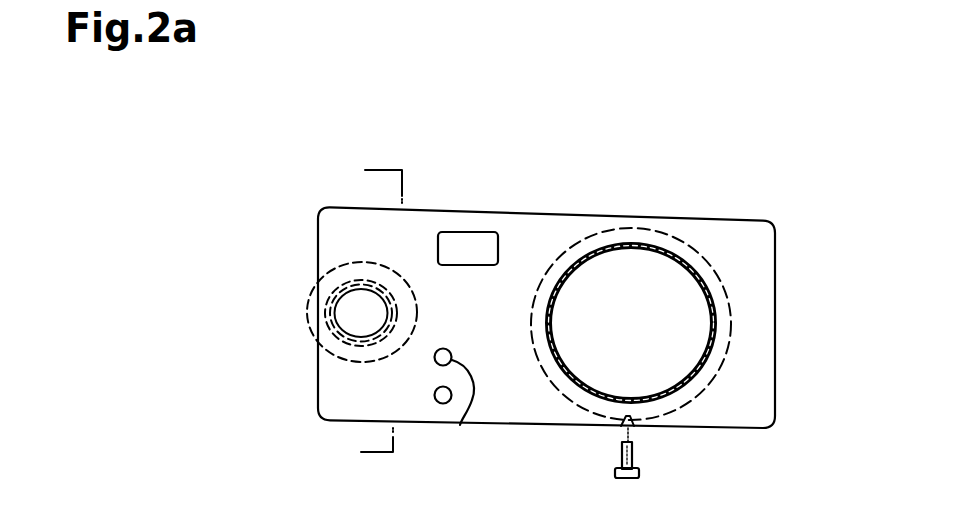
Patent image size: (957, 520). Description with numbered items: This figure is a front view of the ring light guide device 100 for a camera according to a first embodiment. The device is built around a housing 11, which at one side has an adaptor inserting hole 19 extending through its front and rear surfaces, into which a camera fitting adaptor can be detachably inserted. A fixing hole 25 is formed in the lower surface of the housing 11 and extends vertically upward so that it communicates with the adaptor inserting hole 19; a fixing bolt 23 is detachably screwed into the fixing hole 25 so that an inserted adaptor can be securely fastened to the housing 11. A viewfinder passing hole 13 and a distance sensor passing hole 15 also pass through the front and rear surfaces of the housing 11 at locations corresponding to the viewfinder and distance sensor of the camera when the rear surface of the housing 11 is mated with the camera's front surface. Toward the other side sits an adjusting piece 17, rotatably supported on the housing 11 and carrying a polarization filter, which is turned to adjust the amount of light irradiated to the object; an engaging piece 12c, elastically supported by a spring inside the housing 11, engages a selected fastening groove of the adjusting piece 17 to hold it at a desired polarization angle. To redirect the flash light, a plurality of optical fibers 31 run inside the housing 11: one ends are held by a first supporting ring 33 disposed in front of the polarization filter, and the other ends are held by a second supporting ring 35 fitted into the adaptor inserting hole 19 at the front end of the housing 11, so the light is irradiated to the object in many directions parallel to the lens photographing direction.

The ring light guide device 100 is at (787, 228).
The housing 11 is at (775, 268).
The engaging piece 12c is at (397, 345).
The viewfinder passing hole 13 is at (484, 237).
The distance sensor passing hole 15 is at (447, 402).
The adjusting piece 17 is at (327, 268).
The adaptor inserting hole 19 is at (686, 350).
The fixing bolt 23 is at (640, 473).
The fixing hole 25 is at (615, 424).
The optical fibers 31 is at (700, 273).
The first supporting ring 33 is at (353, 284).
The second supporting ring 35 is at (629, 243).